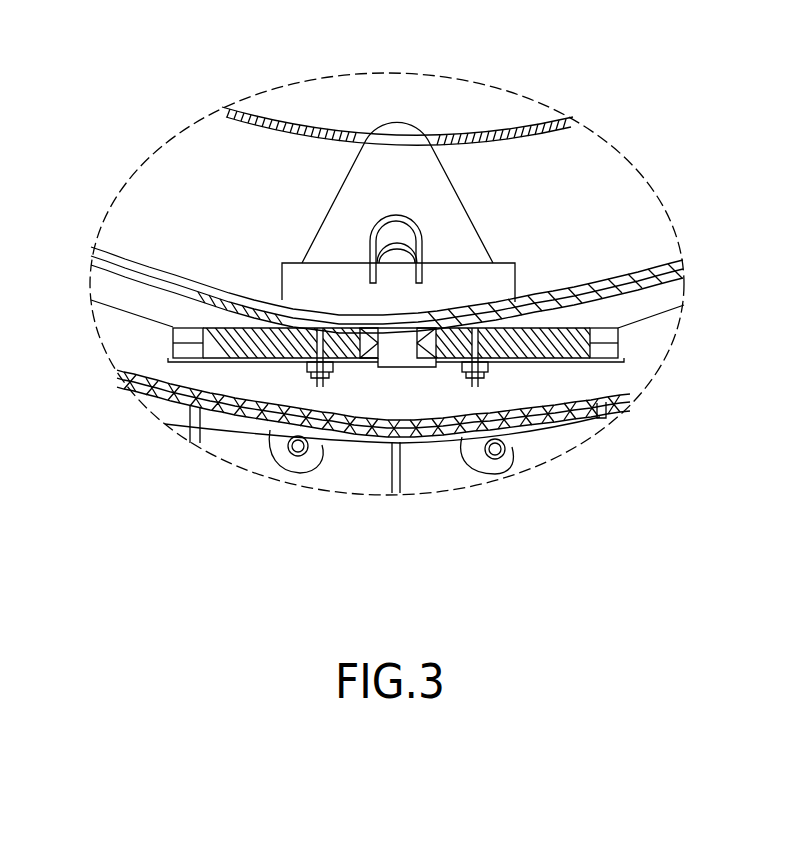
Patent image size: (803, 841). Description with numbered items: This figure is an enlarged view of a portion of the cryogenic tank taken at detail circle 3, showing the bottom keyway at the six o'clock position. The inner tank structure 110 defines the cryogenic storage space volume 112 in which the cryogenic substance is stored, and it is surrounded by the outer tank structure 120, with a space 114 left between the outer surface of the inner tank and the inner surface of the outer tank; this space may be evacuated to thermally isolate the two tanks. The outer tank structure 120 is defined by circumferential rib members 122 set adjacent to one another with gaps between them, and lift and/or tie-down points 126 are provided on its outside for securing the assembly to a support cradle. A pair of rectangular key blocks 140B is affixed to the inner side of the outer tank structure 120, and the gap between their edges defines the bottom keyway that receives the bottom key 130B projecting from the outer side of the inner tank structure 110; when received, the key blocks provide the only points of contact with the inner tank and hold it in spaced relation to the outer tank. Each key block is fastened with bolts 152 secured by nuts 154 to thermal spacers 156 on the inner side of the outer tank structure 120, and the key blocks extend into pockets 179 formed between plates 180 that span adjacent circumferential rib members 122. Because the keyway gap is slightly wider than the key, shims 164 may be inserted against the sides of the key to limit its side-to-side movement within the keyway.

The detail circle 3 is at (447, 76).
The cryogenic storage space volume 112 is at (352, 108).
The inner tank structure 110 is at (125, 266).
The space 114 is at (657, 319).
The outer tank structure 120 is at (118, 378).
The circumferential rib members 122 is at (151, 354).
The lift and/or tie-down points 126 is at (281, 452).
The bottom key 130B is at (398, 380).
The key blocks 140B is at (162, 419).
The bolts 152 is at (318, 388).
The nuts 154 is at (323, 373).
The thermal spacers 156 is at (307, 368).
The shims 164 is at (433, 338).
The pockets 179 is at (268, 341).
The plates 180 is at (220, 327).